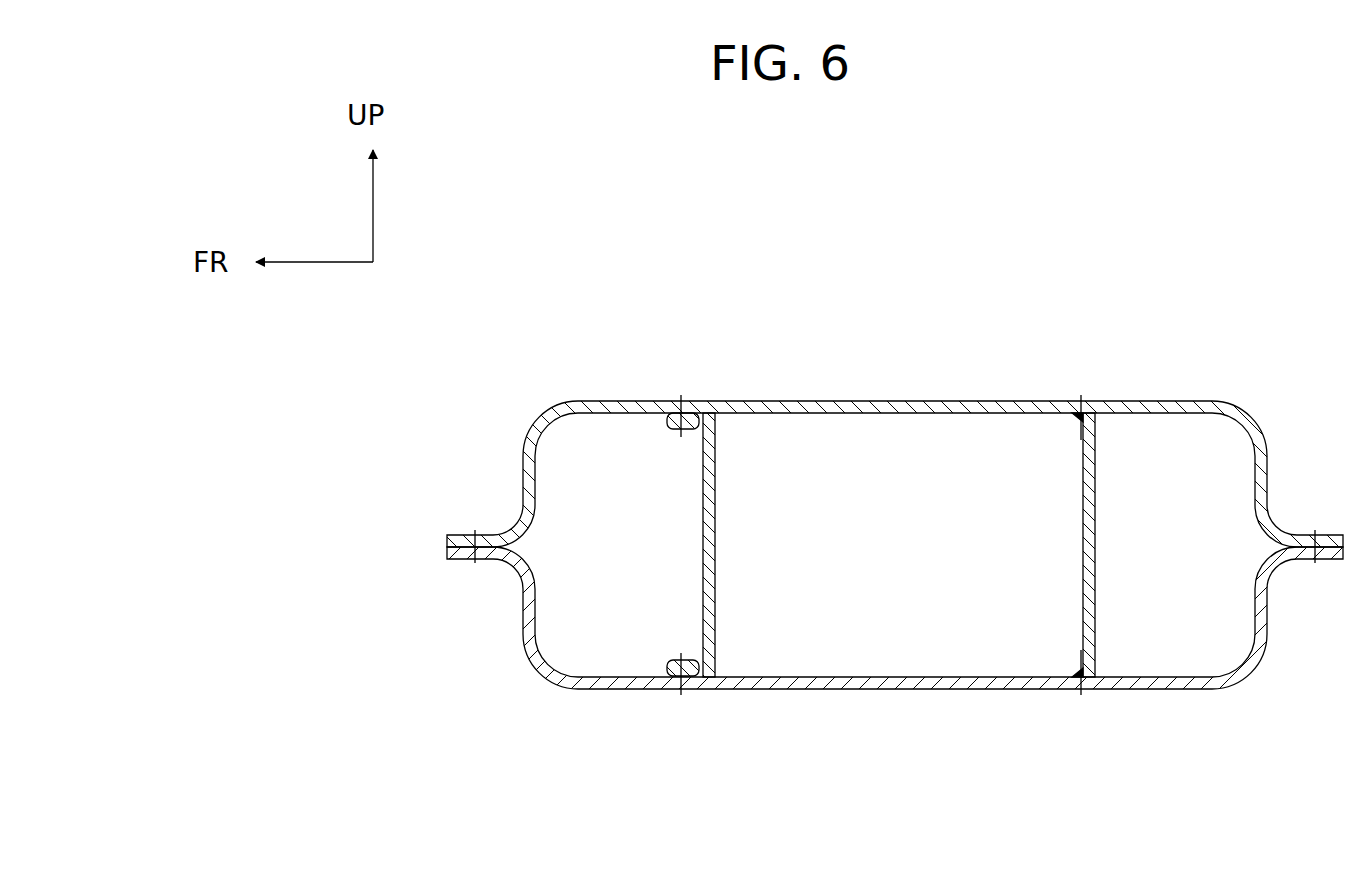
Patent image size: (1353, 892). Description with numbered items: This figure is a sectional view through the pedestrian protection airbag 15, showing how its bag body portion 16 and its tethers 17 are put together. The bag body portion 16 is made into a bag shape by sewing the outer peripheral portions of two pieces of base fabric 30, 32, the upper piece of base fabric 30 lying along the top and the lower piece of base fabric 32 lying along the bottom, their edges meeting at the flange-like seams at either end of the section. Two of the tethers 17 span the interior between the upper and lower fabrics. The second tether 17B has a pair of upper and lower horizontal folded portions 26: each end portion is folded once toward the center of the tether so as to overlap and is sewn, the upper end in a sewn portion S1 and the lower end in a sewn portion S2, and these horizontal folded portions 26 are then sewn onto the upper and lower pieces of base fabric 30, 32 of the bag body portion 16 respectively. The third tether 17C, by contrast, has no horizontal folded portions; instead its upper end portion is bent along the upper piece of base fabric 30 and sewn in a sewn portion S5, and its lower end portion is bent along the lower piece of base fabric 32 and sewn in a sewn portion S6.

The airbag 15 is at (895, 501).
The bag body portion 16 is at (895, 501).
The upper piece of base fabric 30 is at (958, 400).
The lower piece of base fabric 32 is at (953, 688).
The tethers 17 is at (989, 620).
The second tether 17B is at (720, 622).
The third tether 17C is at (1097, 630).
The horizontal folded portion 26 is at (670, 427).
The sewn portion S1 is at (687, 400).
The sewn portion S2 is at (687, 692).
The sewn portion S5 is at (1082, 400).
The sewn portion S6 is at (1082, 690).